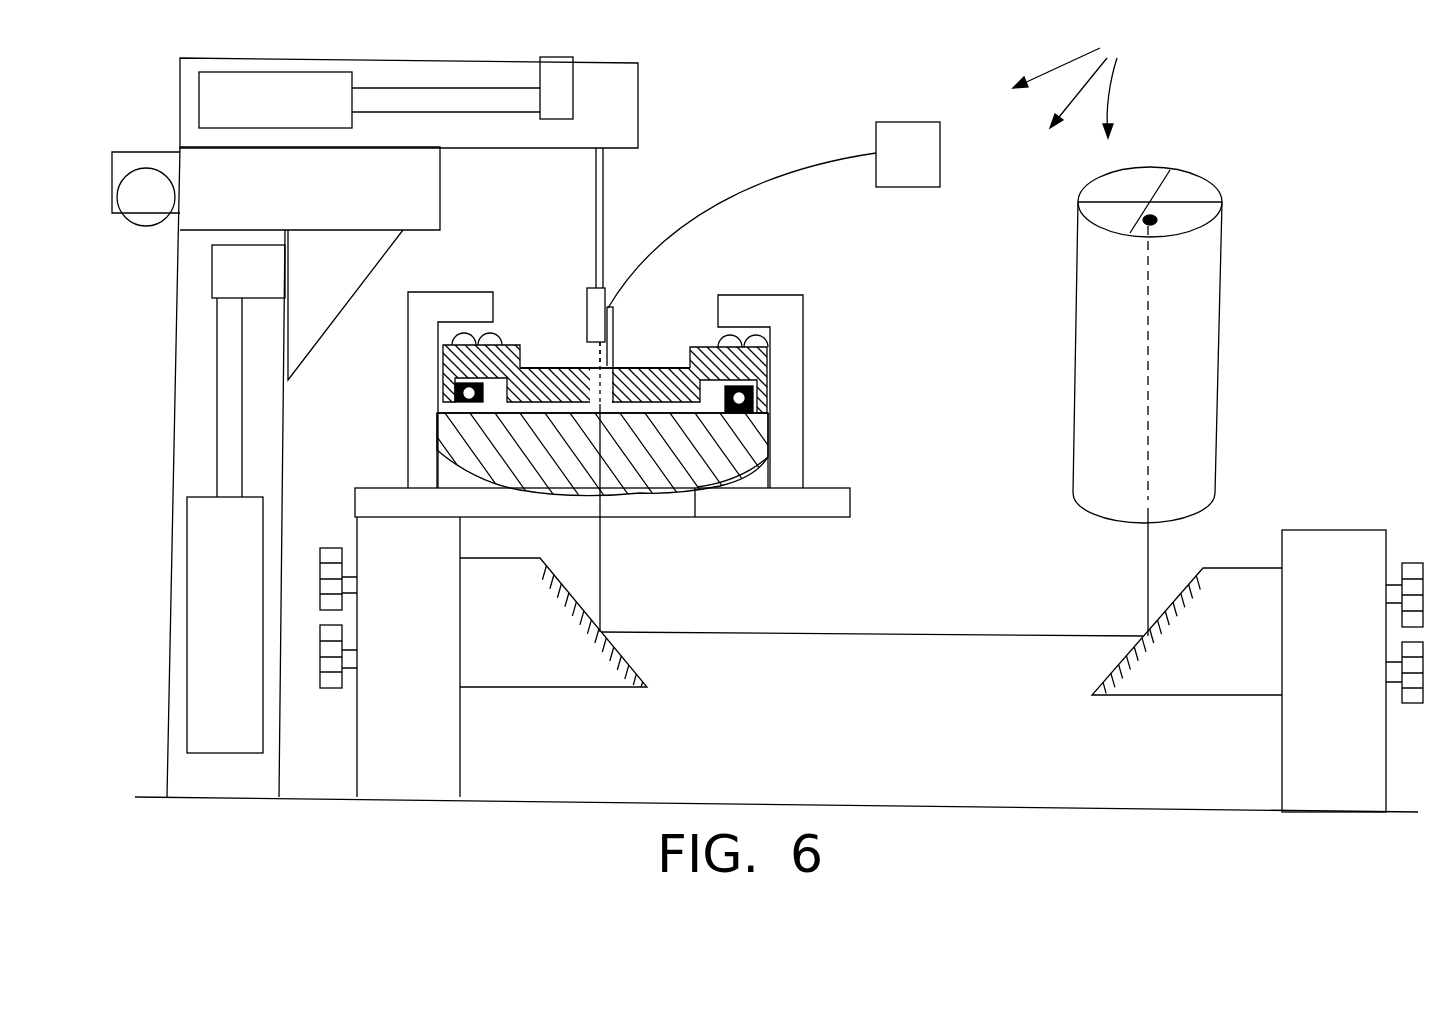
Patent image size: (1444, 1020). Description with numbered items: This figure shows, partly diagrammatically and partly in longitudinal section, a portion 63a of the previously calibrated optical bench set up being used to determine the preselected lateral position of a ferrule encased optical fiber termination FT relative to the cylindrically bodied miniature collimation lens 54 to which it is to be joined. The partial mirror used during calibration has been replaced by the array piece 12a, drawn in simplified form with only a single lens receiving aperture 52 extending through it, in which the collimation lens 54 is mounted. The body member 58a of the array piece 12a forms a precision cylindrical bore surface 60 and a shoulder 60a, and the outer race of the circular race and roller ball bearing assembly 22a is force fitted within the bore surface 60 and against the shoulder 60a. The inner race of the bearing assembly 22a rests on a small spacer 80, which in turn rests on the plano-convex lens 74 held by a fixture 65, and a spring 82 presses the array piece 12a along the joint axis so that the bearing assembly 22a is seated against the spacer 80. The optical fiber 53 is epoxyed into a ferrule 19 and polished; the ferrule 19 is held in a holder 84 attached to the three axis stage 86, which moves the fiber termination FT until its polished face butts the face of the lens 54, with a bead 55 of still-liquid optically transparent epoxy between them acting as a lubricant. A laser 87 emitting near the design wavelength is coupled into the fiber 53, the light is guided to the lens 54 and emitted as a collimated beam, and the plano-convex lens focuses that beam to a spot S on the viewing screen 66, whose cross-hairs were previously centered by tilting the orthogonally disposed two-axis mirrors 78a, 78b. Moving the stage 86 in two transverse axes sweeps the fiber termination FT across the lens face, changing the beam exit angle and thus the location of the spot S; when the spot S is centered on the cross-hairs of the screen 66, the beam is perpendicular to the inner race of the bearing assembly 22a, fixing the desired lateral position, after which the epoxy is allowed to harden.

The three axis stage 86 is at (385, 75).
The holder 84 is at (594, 188).
The bead of adhesive 55 is at (585, 300).
The ferrule 19 is at (614, 326).
The lens receiving aperture 52 is at (636, 400).
The body member 58a is at (752, 362).
The cylindrically bodied miniature collimation lens 54 is at (552, 368).
The shoulder 60a is at (455, 395).
The cylindrical bore surface 60 is at (757, 398).
The circular race and roller ball bearing assembly 22a is at (434, 416).
The spacer 80 is at (743, 453).
The plano-convex lens 74 is at (713, 470).
The optical fiber termination FT is at (640, 408).
The array piece 12a is at (625, 348).
The spring 82 is at (448, 325).
The fixture 65 is at (770, 295).
The laser 87 is at (912, 122).
The optical fiber 53 is at (785, 163).
The portion of optical bench set up 63a is at (1083, 84).
The display screen 66 is at (1193, 388).
The spot S is at (1157, 220).
The two-axis mirror 78a is at (542, 688).
The two-axis mirror 78b is at (1197, 695).